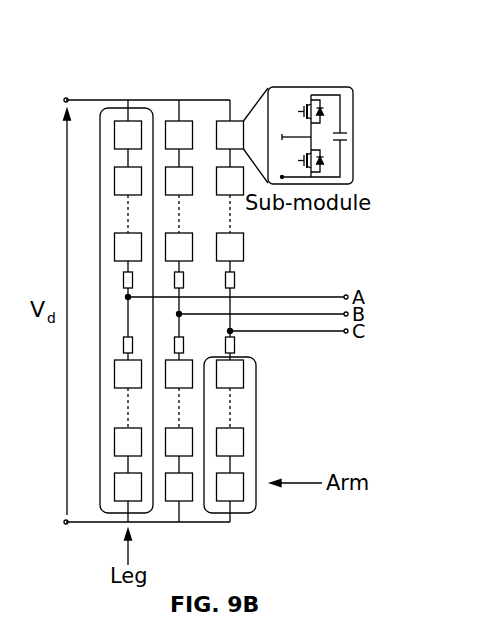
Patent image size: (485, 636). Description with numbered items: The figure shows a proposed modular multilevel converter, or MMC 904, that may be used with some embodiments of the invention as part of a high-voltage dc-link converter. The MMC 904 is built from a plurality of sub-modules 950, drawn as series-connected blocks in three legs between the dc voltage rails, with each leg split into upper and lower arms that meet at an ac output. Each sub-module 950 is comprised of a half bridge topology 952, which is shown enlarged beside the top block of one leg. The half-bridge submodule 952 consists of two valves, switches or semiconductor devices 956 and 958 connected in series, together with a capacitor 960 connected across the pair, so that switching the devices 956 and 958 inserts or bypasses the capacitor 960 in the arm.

The MMC 904 is at (110, 100).
The sub-module 950 is at (223, 120).
The half bridge topology 952 is at (307, 87).
The semiconductor device 956 is at (321, 103).
The semiconductor device 958 is at (321, 167).
The capacitor 960 is at (341, 130).